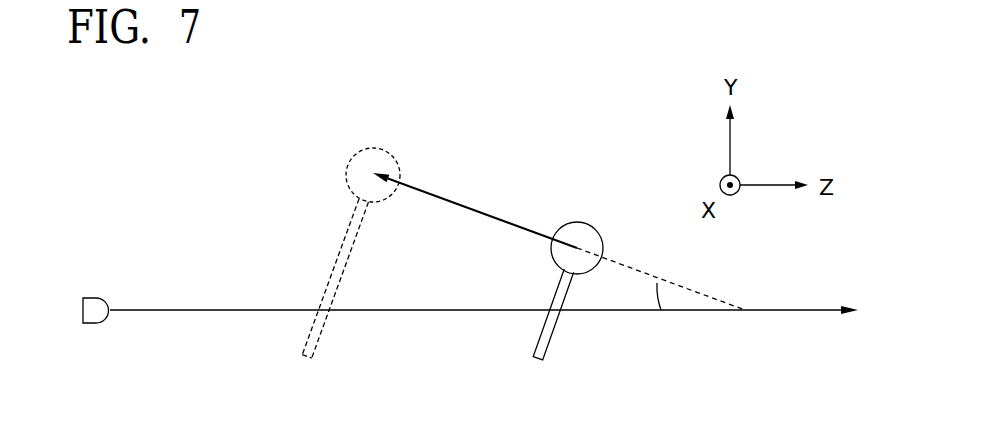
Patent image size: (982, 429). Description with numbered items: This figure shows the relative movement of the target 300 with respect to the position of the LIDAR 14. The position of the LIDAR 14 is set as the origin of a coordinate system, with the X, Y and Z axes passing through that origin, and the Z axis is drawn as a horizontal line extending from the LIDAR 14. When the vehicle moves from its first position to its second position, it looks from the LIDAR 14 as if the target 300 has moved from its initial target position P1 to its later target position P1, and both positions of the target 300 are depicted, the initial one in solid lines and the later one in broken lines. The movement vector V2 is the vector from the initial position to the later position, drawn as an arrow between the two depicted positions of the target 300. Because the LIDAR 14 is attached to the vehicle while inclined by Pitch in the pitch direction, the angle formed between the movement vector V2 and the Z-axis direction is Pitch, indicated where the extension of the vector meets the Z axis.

The LIDAR 14 is at (94, 298).
The target 300 is at (367, 148).
The movement vector V2 is at (498, 218).
The element Pitch is at (661, 279).
The target position P1 is at (533, 187).